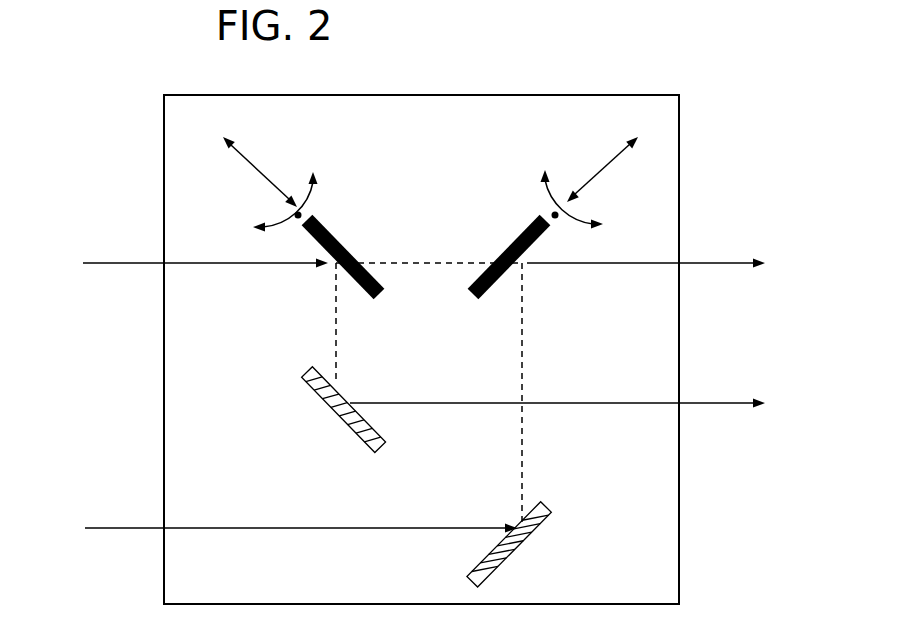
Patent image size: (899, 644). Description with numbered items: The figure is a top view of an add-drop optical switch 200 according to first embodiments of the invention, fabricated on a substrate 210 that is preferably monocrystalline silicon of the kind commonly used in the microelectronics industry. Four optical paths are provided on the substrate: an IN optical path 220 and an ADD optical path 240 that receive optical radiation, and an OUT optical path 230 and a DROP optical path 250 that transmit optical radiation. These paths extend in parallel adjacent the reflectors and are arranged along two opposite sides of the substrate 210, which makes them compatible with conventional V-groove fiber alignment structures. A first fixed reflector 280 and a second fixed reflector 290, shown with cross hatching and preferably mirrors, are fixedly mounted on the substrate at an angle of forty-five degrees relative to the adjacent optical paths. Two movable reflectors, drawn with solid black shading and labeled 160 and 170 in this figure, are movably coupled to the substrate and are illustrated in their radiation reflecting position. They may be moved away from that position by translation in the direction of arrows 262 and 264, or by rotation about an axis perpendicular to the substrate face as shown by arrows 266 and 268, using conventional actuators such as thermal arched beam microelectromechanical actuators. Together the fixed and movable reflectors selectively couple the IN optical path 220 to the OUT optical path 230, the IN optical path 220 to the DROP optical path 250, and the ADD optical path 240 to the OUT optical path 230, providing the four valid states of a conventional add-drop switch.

The add-drop optical switch 200 is at (704, 189).
The substrate 210 is at (557, 95).
The IN optical path 220 is at (117, 263).
The OUT optical path 230 is at (625, 263).
The ADD optical path 240 is at (123, 528).
The DROP optical path 250 is at (598, 402).
The first mirror 160 is at (337, 237).
The second mirror 170 is at (517, 238).
The arrow 262 is at (257, 170).
The arrow 264 is at (600, 172).
The arrow 266 is at (272, 223).
The arrow 268 is at (578, 223).
The first fixed reflector 280 is at (362, 437).
The second fixed reflector 290 is at (547, 512).